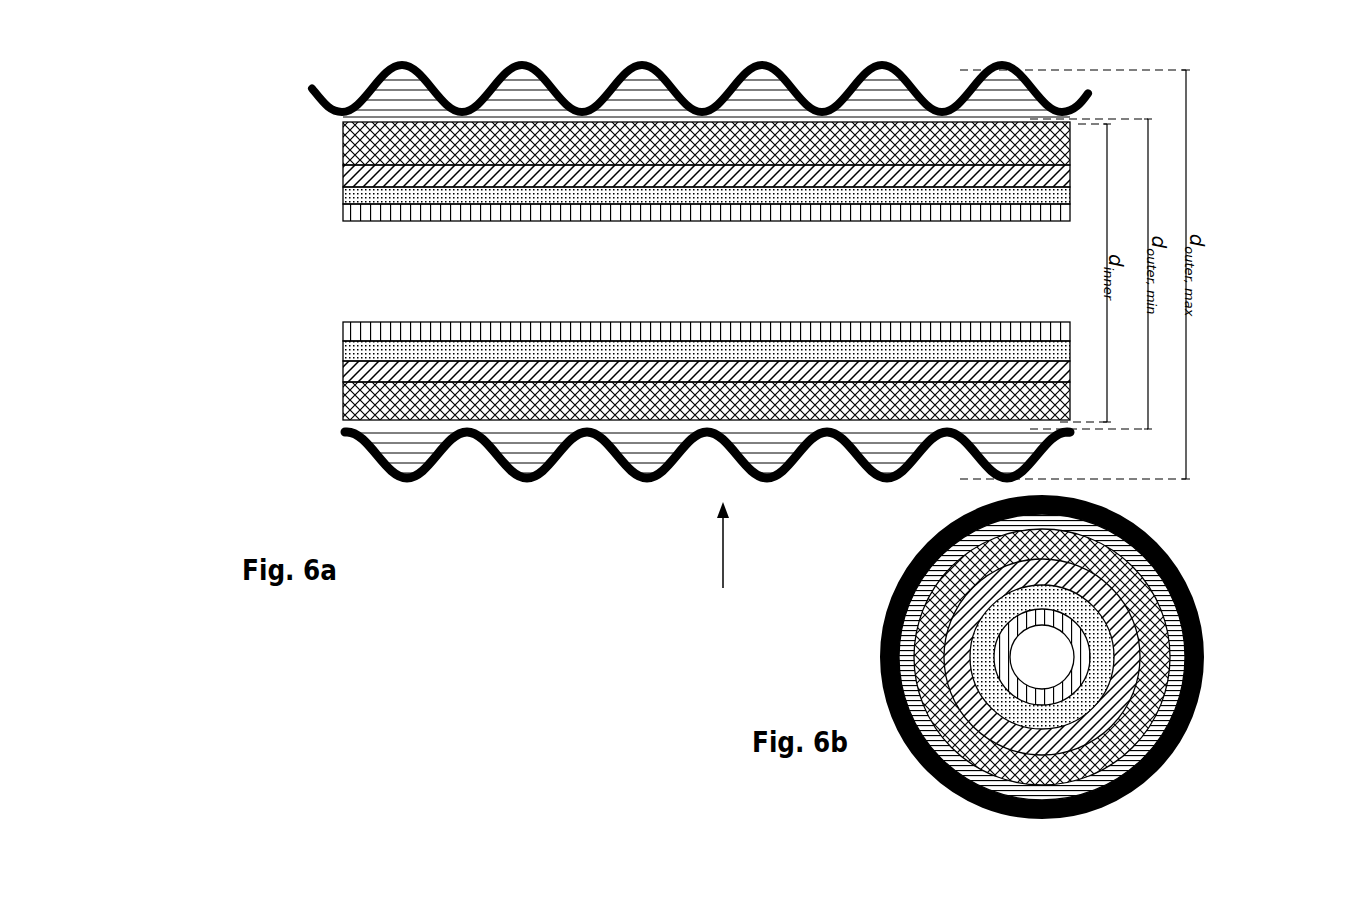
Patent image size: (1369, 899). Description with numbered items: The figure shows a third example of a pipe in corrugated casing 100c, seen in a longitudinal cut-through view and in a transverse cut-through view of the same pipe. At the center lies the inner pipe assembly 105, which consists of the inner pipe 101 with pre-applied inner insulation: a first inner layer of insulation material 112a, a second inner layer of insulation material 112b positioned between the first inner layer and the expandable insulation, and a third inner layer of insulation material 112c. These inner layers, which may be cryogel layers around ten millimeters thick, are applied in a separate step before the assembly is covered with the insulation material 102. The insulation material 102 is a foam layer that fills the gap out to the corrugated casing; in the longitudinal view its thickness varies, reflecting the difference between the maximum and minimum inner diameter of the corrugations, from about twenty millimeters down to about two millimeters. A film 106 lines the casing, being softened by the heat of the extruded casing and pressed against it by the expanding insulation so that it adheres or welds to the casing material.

In FIG. 6b, the pipe in corrugated casing 100c is at (838, 636).
In FIG. 6a, the inner pipe 101 is at (669, 273).
In FIG. 6b, the inner pipe 101 is at (1148, 565).
In FIG. 6a, the insulation material 102 is at (390, 438).
In FIG. 6b, the insulation material 102 is at (1205, 655).
In FIG. 6a, the inner pipe assembly 105 is at (616, 271).
In FIG. 6a, the film 106 is at (411, 482).
In FIG. 6b, the film 106 is at (1200, 613).
In FIG. 6a, the first inner layer of insulation material 112a is at (330, 355).
In FIG. 6b, the first inner layer of insulation material 112a is at (1145, 746).
In FIG. 6a, the second inner layer of insulation material 112b is at (330, 380).
In FIG. 6b, the second inner layer of insulation material 112b is at (1188, 723).
In FIG. 6a, the third inner layer of insulation material 112c is at (330, 405).
In FIG. 6b, the third inner layer of insulation material 112c is at (1202, 692).